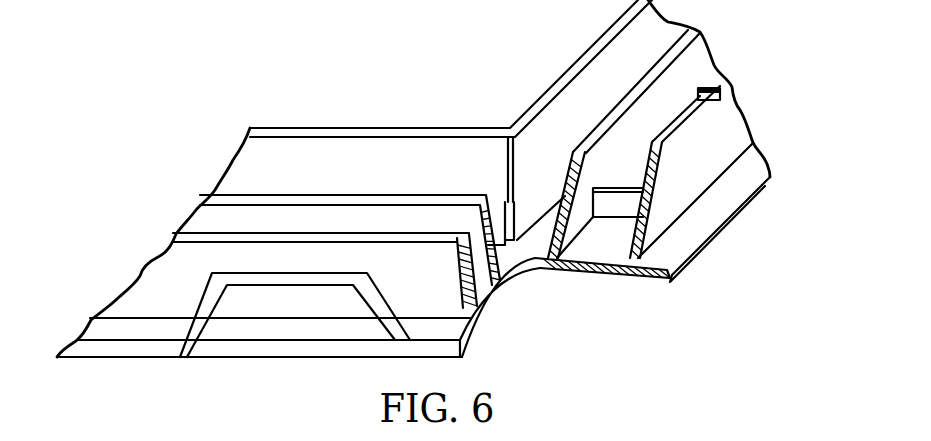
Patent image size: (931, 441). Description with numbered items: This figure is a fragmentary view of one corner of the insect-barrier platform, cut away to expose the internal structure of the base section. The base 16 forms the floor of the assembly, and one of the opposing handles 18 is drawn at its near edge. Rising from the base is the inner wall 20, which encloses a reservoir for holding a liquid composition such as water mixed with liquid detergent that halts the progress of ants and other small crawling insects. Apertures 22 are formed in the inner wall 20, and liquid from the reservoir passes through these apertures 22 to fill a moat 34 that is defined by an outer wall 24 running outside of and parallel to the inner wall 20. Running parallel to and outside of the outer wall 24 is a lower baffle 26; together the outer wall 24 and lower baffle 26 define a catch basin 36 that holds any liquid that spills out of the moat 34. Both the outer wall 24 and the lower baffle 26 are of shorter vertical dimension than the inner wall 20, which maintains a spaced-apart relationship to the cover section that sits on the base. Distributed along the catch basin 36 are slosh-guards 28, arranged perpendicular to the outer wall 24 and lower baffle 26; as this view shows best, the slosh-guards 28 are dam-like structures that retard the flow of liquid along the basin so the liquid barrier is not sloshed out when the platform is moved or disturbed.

The base 16 is at (695, 220).
The handles 18 is at (350, 281).
The inner wall 20 is at (380, 152).
The apertures 22 is at (500, 217).
The outer wall 24 is at (208, 226).
The lower baffle 26 is at (182, 272).
The slosh-guards 28 is at (620, 205).
The moat 34 is at (538, 182).
The catch basin 36 is at (645, 148).